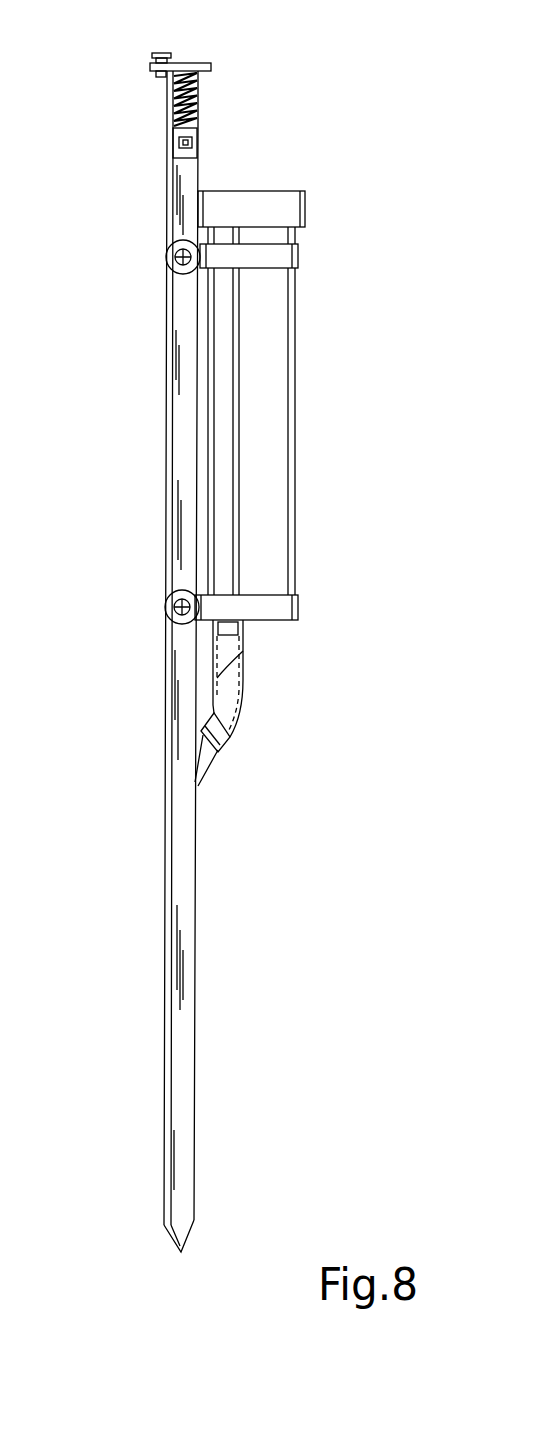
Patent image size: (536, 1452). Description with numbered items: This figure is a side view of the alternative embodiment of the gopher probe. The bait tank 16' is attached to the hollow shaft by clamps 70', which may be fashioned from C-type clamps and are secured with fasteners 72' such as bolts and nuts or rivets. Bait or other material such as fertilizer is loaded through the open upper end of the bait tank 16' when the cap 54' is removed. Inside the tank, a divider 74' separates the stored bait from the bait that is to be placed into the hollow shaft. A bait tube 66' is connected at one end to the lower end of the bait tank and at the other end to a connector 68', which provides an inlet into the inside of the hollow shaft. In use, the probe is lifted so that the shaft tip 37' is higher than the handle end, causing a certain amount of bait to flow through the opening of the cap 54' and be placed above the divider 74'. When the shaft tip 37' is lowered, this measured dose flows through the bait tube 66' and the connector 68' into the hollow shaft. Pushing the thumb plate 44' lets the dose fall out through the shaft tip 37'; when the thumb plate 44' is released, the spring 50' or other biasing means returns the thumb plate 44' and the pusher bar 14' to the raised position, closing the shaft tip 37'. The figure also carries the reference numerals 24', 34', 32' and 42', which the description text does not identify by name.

The pusher bar 14' is at (177, 661).
The stake shaft 24' is at (225, 677).
The shaft tip 37' is at (230, 1214).
The upper end of stake 34' is at (128, 100).
The square fastener 32' is at (141, 160).
The knob 42' is at (116, 41).
The thumb plate 44' is at (194, 69).
The spring 50' is at (241, 99).
The bait tank 16' is at (252, 501).
The cap 54' is at (296, 209).
The clamps 70' is at (302, 432).
The fasteners 72' is at (119, 444).
The divider 74' is at (301, 411).
The bait tube 66' is at (285, 678).
The connector 68' is at (248, 762).